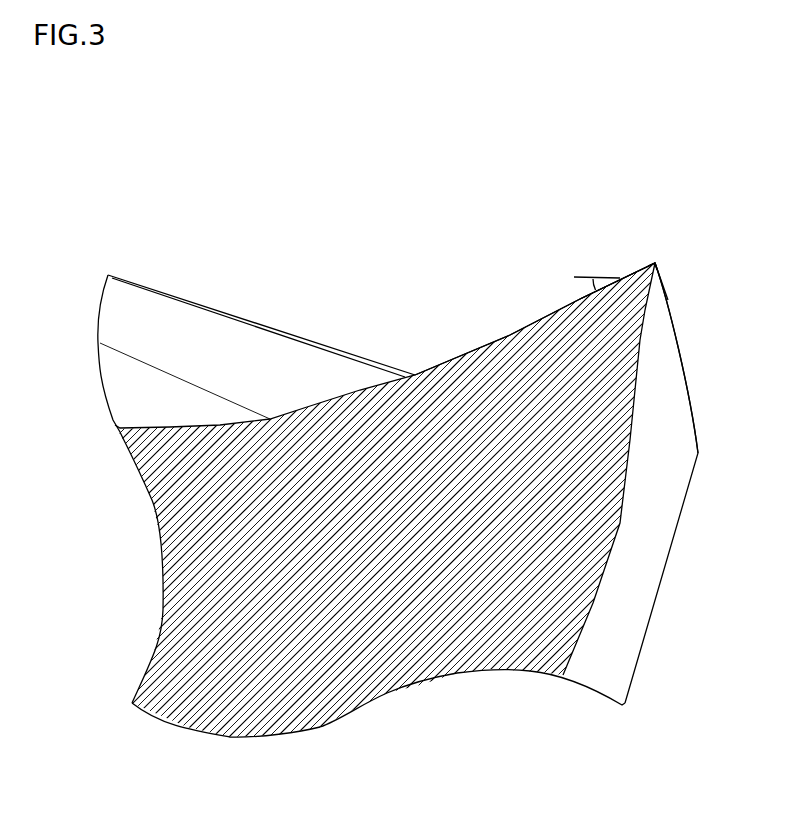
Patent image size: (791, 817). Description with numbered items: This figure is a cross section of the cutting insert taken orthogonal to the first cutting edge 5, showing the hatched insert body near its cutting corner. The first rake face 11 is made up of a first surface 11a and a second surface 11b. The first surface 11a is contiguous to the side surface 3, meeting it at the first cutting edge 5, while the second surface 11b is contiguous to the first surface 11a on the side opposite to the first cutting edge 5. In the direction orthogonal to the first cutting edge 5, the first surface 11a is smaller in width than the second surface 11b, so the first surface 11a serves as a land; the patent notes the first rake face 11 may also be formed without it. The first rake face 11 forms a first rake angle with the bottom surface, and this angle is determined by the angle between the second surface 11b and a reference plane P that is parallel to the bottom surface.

The side surface 3 is at (679, 341).
The first cutting edge 5 is at (657, 263).
The first rake face 11 is at (663, 133).
The first surface 11a is at (654, 263).
The second surface 11b is at (524, 322).
The reference plane P is at (589, 279).